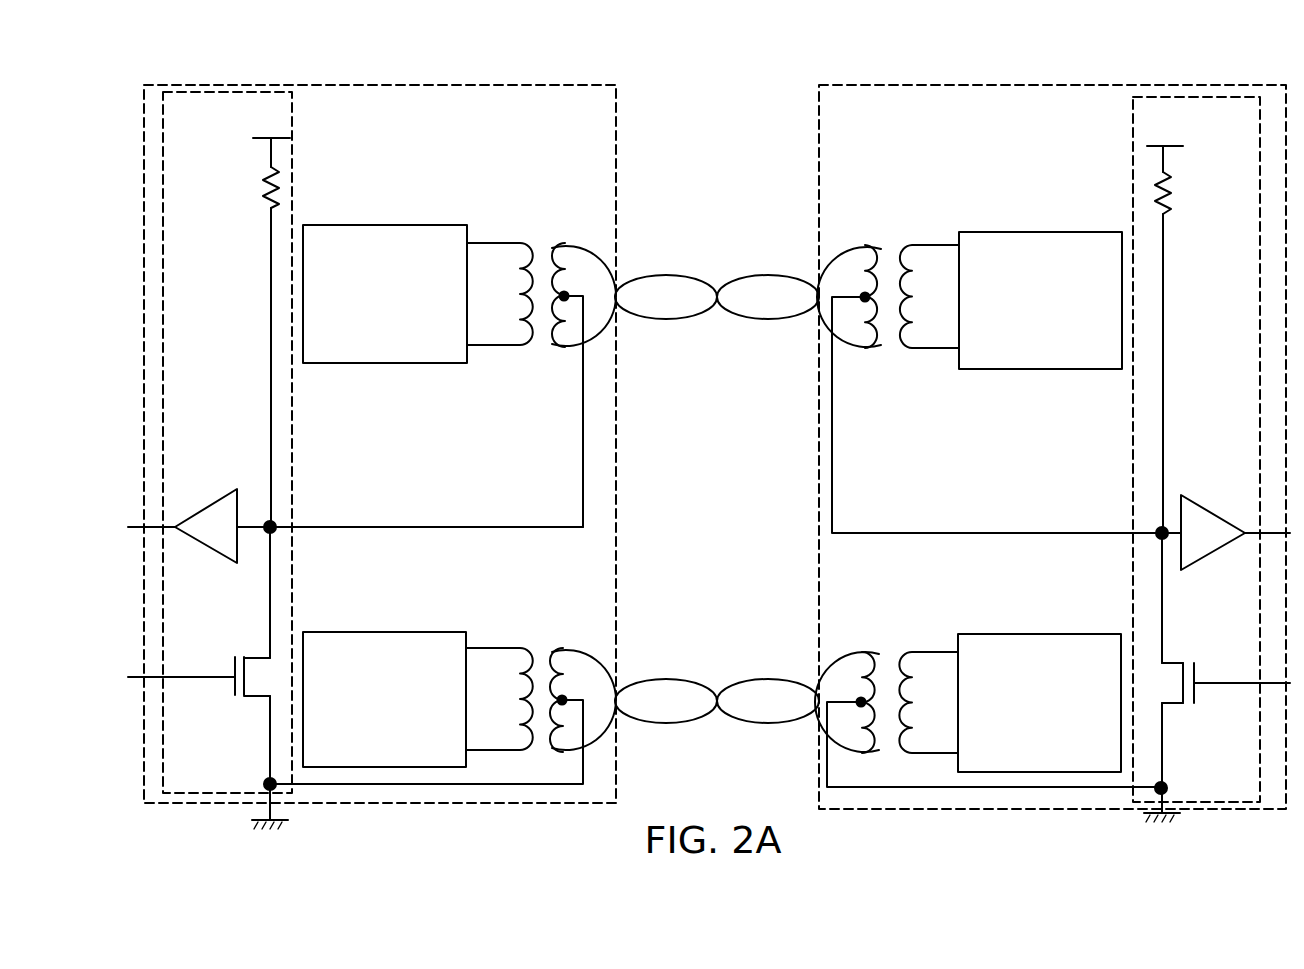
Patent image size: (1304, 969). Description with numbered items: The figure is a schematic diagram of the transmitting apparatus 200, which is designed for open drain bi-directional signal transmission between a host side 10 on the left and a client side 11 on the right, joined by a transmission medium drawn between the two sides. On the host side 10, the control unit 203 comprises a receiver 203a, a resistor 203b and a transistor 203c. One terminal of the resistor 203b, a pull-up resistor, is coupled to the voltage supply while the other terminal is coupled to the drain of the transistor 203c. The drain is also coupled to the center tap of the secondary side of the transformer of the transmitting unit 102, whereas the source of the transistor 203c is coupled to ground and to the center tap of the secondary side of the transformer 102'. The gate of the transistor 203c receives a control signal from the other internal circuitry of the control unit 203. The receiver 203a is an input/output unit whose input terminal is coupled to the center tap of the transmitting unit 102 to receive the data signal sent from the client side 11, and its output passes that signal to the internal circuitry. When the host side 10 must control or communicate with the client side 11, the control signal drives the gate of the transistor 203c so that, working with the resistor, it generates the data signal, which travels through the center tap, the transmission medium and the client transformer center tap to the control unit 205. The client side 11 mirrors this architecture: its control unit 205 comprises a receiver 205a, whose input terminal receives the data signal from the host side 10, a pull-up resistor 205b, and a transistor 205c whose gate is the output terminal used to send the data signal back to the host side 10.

The transmitting apparatus 200 is at (181, 75).
The host side 10 is at (617, 124).
The client side 11 is at (818, 128).
The transmitting unit 102 is at (459, 350).
The transformer 102' is at (443, 678).
The control unit 203 is at (292, 162).
The receiver 203a is at (207, 510).
The resistor 203b is at (243, 187).
The transistor 203c is at (199, 694).
The control unit 205 is at (1144, 141).
The receiver 205a is at (1205, 506).
The resistor 205b is at (1191, 193).
The transistor 205c is at (1226, 703).